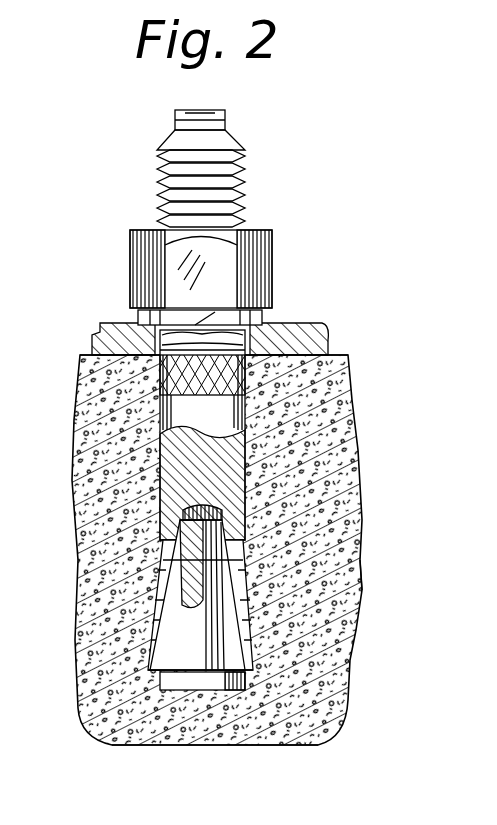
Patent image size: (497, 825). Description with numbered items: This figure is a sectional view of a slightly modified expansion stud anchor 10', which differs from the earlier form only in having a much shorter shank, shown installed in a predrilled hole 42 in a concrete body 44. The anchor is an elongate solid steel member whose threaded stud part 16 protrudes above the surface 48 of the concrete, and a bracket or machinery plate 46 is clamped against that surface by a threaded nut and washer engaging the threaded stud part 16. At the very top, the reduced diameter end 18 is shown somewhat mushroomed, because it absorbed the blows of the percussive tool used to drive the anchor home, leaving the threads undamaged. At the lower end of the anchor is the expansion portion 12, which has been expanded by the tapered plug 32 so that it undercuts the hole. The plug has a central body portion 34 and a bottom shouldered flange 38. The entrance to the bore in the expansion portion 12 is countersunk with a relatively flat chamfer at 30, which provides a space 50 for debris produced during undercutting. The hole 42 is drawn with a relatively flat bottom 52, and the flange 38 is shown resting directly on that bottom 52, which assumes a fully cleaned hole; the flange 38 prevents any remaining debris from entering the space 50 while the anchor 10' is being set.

The expansion stud anchor 10' is at (252, 550).
The expansion portion 12 is at (165, 583).
The threaded stud part 16 is at (256, 190).
The reduced diameter end 18 is at (222, 110).
The countersink 30 is at (250, 660).
The tapered plug 32 is at (300, 605).
The central body portion 34 is at (185, 622).
The shouldered flange 38 is at (230, 745).
The predrilled hole 42 is at (250, 518).
The concrete body 44 is at (362, 565).
The bracket or machinery plate 46 is at (315, 323).
The surface 48 is at (340, 356).
The space 50 is at (268, 262).
The bottom 52 is at (264, 312).